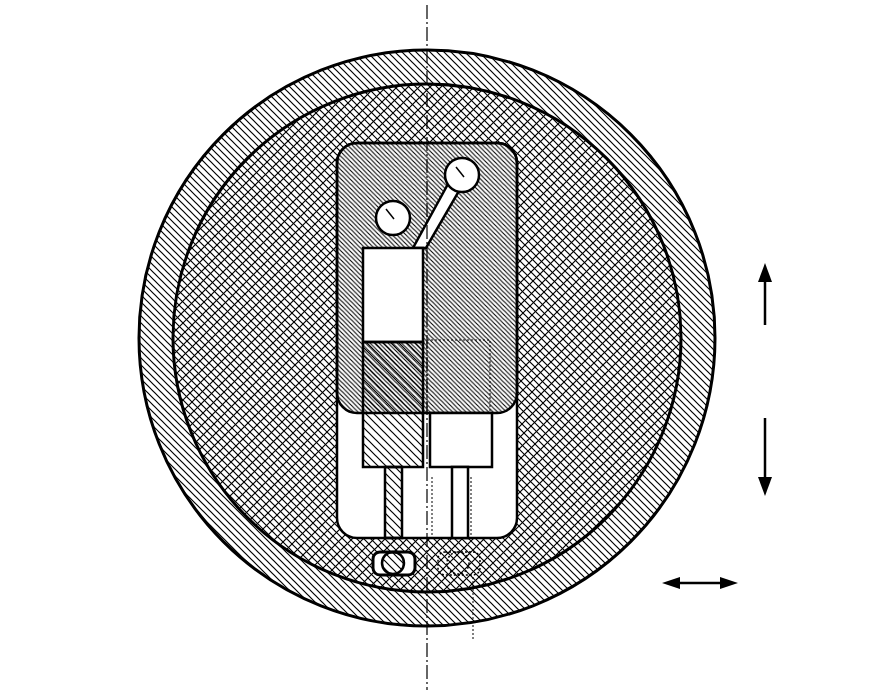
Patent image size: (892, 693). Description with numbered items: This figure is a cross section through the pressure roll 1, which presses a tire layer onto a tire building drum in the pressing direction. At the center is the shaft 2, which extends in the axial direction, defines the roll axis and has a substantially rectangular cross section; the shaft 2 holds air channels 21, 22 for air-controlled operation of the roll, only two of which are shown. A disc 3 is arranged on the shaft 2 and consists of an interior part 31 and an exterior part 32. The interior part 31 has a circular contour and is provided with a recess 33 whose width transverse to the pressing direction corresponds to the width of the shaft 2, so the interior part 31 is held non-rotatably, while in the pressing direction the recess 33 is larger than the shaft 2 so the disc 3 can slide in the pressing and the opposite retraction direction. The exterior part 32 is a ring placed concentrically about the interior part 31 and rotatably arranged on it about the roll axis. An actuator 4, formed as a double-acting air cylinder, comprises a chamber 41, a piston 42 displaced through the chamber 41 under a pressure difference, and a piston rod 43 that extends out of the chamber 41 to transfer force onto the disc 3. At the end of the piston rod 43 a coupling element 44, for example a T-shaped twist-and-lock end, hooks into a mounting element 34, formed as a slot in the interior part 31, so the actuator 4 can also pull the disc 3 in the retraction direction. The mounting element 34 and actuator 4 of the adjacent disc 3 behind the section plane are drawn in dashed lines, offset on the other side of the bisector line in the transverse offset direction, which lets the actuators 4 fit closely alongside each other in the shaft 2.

The pressure roll 1 is at (108, 100).
The shaft 2 is at (377, 329).
The disc 3 is at (418, 338).
The air channel 21 is at (500, 143).
The air channel 22 is at (367, 143).
The interior part 31 is at (197, 395).
The exterior part 32 is at (225, 518).
The recess 33 is at (320, 580).
The mounting element 34 is at (412, 590).
The actuator 4 is at (355, 565).
The chamber 41 is at (375, 292).
The piston 42 is at (375, 423).
The piston rod 43 is at (385, 500).
The coupling element 44 is at (390, 580).